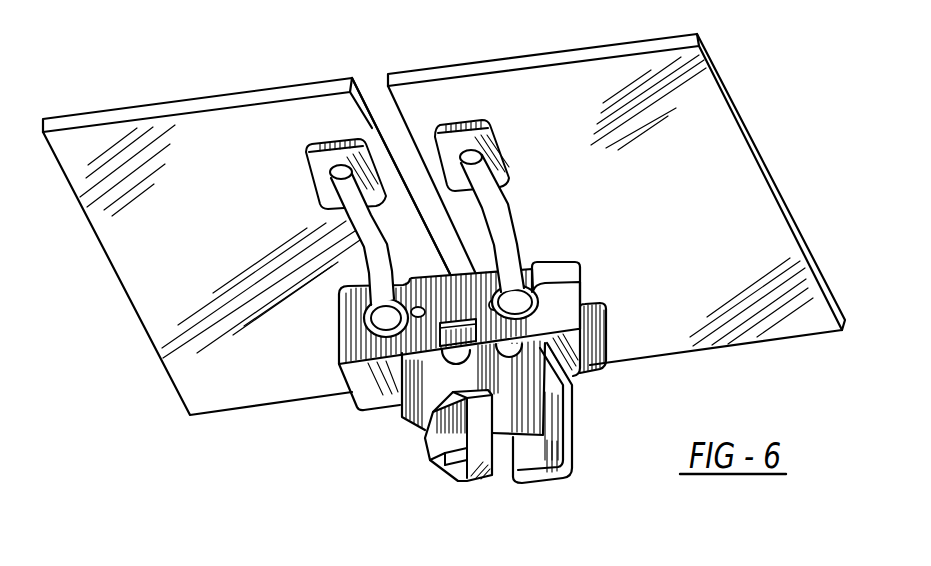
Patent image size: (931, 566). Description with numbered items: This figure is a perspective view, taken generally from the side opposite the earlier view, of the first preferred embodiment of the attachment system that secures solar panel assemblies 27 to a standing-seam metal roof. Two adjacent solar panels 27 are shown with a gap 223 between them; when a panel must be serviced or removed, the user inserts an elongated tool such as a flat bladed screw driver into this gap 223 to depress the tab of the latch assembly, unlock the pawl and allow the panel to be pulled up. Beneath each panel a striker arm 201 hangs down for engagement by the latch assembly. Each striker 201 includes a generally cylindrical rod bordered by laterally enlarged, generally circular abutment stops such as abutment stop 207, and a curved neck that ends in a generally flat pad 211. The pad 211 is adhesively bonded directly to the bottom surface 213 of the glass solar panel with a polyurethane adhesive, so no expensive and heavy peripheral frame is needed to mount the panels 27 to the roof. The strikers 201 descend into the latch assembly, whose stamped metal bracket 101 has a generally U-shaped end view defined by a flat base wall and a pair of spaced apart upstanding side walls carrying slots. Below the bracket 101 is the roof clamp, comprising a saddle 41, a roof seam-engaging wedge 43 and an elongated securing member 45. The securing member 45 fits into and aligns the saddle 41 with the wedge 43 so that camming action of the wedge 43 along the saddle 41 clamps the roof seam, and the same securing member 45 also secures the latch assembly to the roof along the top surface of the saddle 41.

The solar panel assembly 27 is at (100, 118).
The bottom surface of the glass solar panel 213 is at (198, 207).
The gap 223 is at (379, 67).
The flat pad 211 is at (322, 142).
The striker arm 201 is at (508, 221).
The stamped metal bracket 101 is at (350, 325).
The abutment stop 207 is at (583, 282).
The saddle 41 is at (553, 432).
The securing member 45 is at (455, 457).
The roof seam-engaging wedge 43 is at (479, 480).